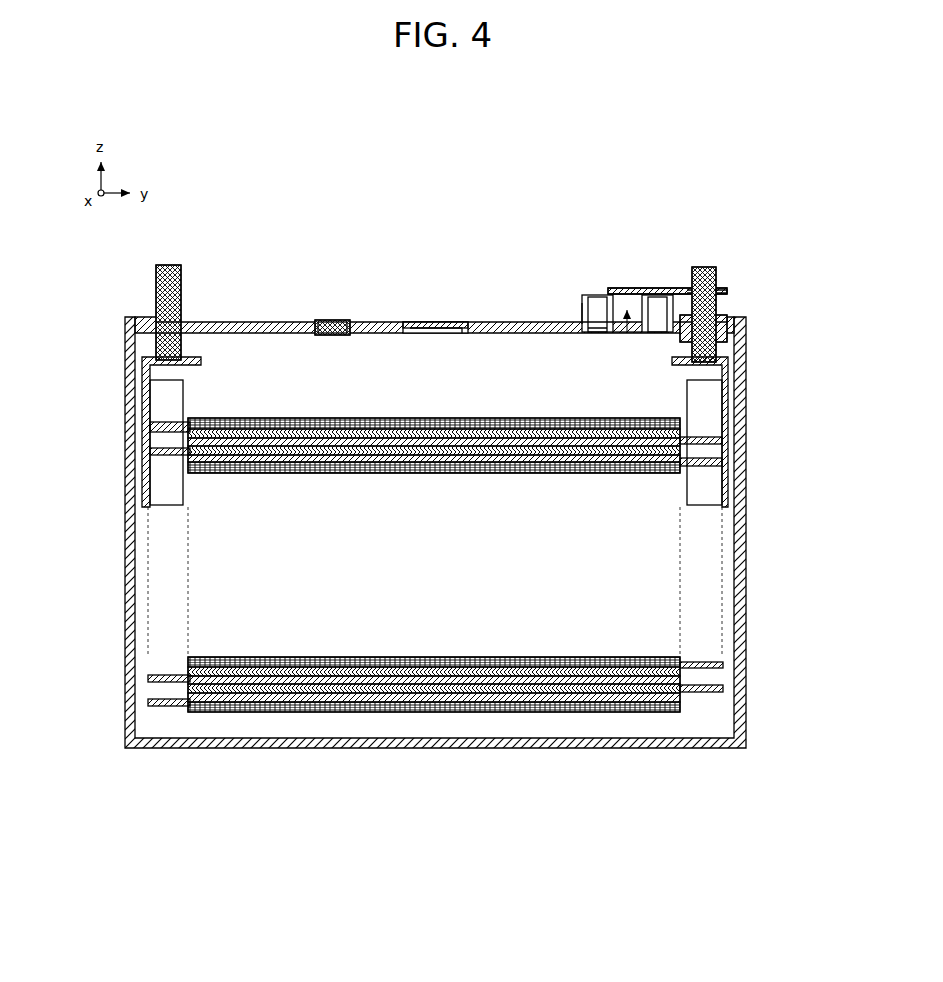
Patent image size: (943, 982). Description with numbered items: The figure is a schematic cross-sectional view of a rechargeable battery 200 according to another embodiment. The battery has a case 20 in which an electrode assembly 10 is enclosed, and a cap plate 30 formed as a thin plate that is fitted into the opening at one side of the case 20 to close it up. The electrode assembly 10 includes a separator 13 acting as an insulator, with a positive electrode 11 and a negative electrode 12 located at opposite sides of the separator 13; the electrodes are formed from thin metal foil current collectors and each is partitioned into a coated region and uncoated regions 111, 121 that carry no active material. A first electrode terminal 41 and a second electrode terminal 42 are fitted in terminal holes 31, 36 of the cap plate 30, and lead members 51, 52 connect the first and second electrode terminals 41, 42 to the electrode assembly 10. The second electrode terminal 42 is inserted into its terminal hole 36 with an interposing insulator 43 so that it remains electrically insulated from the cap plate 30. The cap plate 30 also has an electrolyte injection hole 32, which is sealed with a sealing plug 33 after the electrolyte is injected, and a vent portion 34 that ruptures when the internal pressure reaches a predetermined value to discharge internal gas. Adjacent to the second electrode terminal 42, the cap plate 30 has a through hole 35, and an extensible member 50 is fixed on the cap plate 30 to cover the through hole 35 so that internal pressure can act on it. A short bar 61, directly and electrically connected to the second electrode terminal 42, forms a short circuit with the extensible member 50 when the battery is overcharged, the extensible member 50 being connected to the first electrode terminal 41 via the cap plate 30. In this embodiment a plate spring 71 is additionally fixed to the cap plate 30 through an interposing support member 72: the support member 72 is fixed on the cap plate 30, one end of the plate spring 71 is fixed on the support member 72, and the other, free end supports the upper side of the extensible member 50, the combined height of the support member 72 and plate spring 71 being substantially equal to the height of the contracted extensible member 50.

The rechargeable battery 200 is at (636, 186).
The case 20 is at (742, 543).
The cap plate 30 is at (484, 322).
The terminal hole 31 is at (172, 316).
The electrolyte injection hole 32 is at (331, 335).
The sealing plug 33 is at (328, 320).
The vent portion 34 is at (440, 322).
The through hole 35 is at (630, 336).
The terminal hole 36 is at (717, 300).
The first electrode terminal 41 is at (169, 265).
The second electrode terminal 42 is at (704, 267).
The insulator 43 is at (726, 317).
The extensible member 50 is at (599, 333).
The lead member 51 is at (145, 368).
The lead member 52 is at (729, 369).
The short bar 61 is at (640, 288).
The plate spring 71 is at (582, 300).
The support member 72 is at (580, 312).
The electrode assembly 10 is at (434, 613).
The positive electrode 11 is at (265, 700).
The negative electrode 12 is at (313, 692).
The separator 13 is at (433, 690).
The uncoated region 111 is at (170, 706).
The uncoated region 121 is at (697, 692).